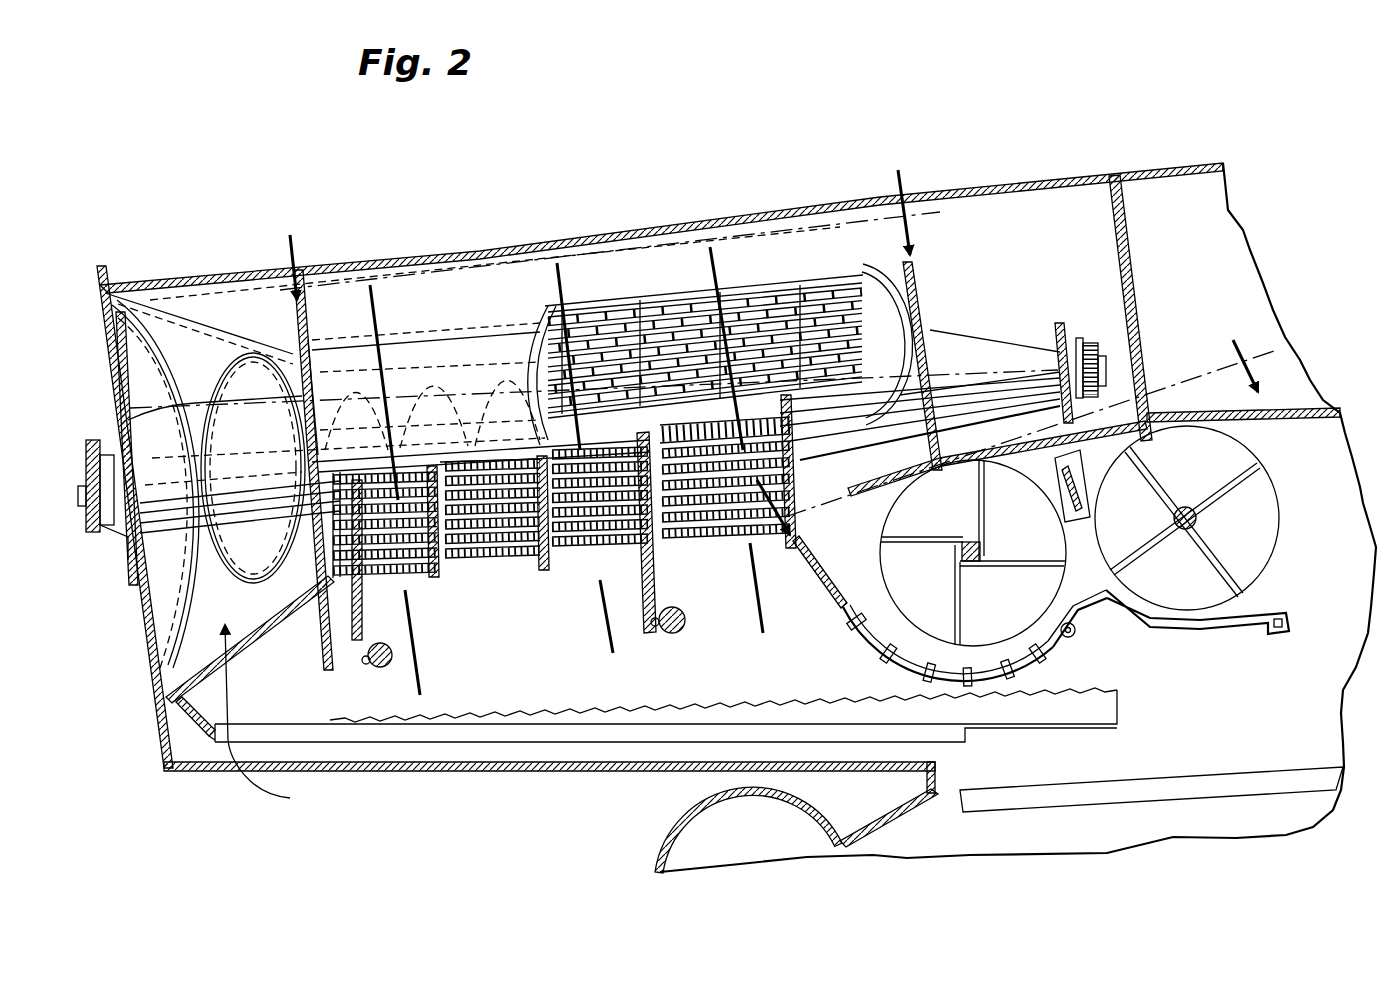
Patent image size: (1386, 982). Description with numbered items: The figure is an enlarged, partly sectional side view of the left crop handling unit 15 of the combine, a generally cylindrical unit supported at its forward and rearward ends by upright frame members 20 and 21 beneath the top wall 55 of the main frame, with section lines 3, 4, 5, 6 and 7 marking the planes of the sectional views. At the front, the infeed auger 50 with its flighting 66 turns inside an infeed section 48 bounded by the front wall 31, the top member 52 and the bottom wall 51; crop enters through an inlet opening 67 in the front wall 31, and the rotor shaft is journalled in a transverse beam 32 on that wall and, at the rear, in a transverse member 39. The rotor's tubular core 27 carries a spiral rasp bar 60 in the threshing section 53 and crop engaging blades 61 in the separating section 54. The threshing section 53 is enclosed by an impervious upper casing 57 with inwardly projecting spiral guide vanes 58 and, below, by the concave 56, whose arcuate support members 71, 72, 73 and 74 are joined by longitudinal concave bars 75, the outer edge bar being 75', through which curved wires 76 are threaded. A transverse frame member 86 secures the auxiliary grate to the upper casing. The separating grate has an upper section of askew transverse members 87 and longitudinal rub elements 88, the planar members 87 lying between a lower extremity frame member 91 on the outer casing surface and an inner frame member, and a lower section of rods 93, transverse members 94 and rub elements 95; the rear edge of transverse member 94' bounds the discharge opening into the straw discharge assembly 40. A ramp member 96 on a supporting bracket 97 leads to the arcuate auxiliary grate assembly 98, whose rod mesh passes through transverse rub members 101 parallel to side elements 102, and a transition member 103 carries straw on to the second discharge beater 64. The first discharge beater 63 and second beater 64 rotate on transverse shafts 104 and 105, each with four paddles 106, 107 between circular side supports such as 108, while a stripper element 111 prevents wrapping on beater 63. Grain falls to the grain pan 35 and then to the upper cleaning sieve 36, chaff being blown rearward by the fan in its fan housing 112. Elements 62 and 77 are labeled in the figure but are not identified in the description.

The section line 3- 3 is at (405, 297).
The section line 4- 4 is at (600, 277).
The section line 5- 5 is at (747, 257).
The section line 6- 6 is at (1007, 423).
The section line 7- 7 is at (596, 222).
The left crop handling unit 15 is at (523, 630).
The upright frame member 20 is at (286, 298).
The upright frame member 21 is at (914, 272).
The tubular core 27 is at (206, 432).
The front wall 31 is at (97, 374).
The transverse beam 32 is at (98, 528).
The grain pan 35 is at (678, 715).
The upper cleaning sieve 36 is at (1232, 770).
The transverse member 39 is at (1057, 336).
The straw discharge assembly 40 is at (1272, 438).
The infeed section 48 is at (272, 718).
The infeed auger 50 is at (146, 303).
The bottom wall 51 is at (255, 640).
The top member 52 is at (222, 322).
The threshing section 53 is at (456, 283).
The separating section 54 is at (738, 250).
The top wall 55 is at (652, 223).
The concave 56 is at (493, 582).
The upper casing 57 is at (420, 342).
The guide vanes 58 is at (410, 358).
The spiral rasp bar 60 is at (456, 326).
The crop engaging blade 61 is at (886, 524).
The separating rotor 62 is at (763, 270).
The first discharge beater 63 is at (1070, 592).
The second discharge beater 64 is at (1285, 543).
The flighting 66 is at (172, 386).
The inlet opening 67 is at (156, 685).
The support member 71 is at (326, 577).
The support member 72 is at (432, 600).
The support member 73 is at (562, 578).
The support member 74 is at (660, 560).
The concave bars 75 is at (452, 534).
The concave bar 75' is at (550, 533).
The curved rods or wires 76 is at (418, 583).
The support post 77 is at (364, 582).
The transverse frame member 86 is at (545, 313).
The transverse members 87 is at (640, 308).
The longitudinal rub elements 88 is at (858, 265).
The lower extremity frame member 91 is at (868, 392).
The lower rods 93 is at (706, 540).
The lower transverse members 94 is at (726, 547).
The transverse member 94' is at (1031, 441).
The longitudinal rub elements 95 is at (772, 552).
The ramp member 96 is at (825, 562).
The supporting bracket 97 is at (826, 588).
The auxiliary grate assembly 98 is at (838, 636).
The transverse rub members 101 is at (896, 655).
The side elements 102 is at (938, 676).
The transition member 103 is at (1208, 636).
The transverse shaft 104 is at (984, 546).
The transverse shaft 105 is at (1192, 505).
The paddle 106 is at (986, 500).
The paddle 107 is at (1208, 542).
The circular side support 108 is at (973, 591).
The stripper element 111 is at (1078, 466).
The fan housing 112 is at (663, 855).